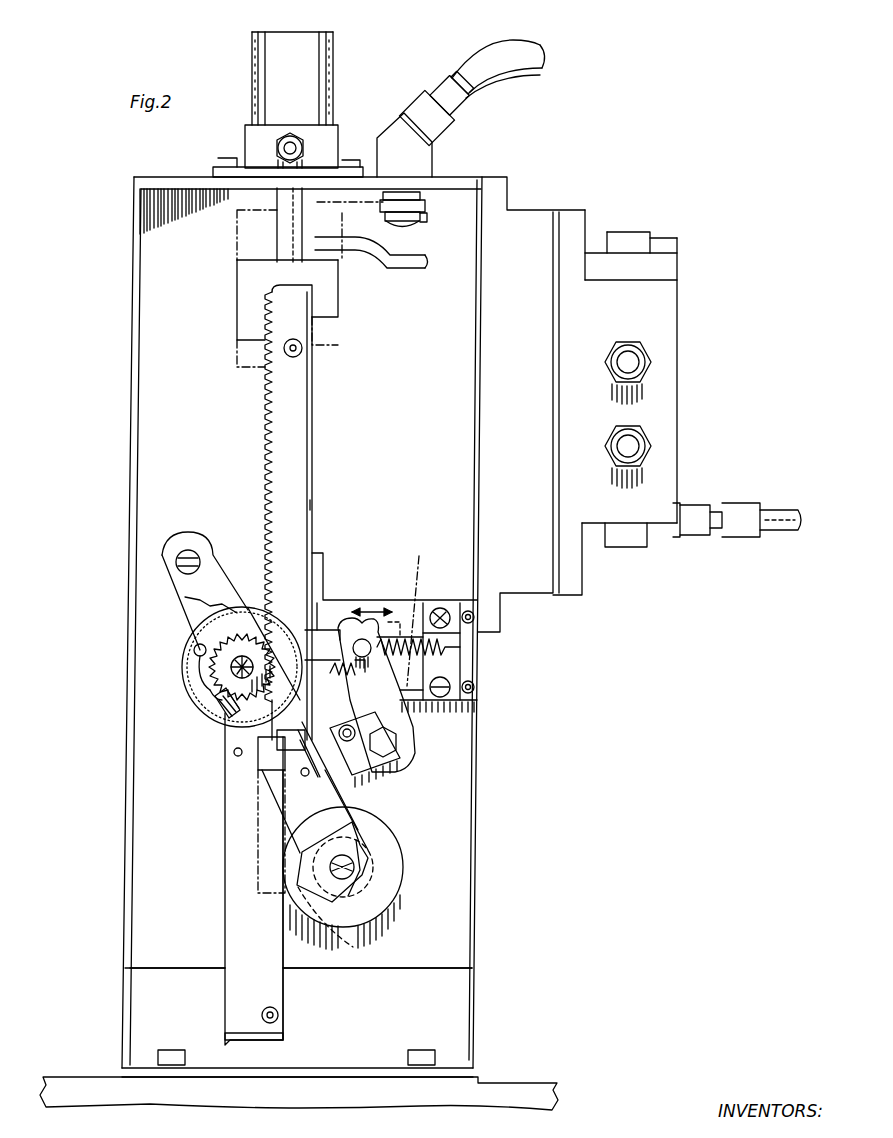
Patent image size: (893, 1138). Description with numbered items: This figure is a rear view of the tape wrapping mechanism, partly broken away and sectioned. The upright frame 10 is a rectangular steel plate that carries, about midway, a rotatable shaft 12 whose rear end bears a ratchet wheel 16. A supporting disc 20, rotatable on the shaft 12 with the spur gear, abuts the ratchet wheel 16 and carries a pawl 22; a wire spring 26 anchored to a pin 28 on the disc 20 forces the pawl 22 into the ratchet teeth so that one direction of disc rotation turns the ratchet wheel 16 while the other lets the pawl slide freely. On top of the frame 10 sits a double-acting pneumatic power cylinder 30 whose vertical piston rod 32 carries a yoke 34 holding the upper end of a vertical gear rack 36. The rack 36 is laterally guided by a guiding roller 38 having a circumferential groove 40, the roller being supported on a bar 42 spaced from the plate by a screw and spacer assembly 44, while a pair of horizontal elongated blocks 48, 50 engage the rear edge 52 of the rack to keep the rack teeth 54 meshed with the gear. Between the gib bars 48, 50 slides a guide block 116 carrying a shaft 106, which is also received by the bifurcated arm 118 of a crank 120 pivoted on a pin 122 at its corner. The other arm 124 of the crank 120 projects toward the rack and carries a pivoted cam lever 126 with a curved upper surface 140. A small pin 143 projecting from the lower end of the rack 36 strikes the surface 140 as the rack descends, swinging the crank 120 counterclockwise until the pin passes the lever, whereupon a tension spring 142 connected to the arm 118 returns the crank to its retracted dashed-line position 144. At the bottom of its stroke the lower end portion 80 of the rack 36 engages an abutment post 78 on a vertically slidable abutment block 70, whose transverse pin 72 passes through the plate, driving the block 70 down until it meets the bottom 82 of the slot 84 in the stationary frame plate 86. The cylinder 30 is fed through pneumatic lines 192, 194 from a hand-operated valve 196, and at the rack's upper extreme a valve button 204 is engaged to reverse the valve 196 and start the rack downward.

The frame 10 is at (478, 948).
The shaft 12 is at (237, 667).
The ratchet wheel 16 is at (230, 680).
The supporting disc 20 is at (238, 612).
The pawl 22 is at (217, 693).
The wire spring 26 is at (200, 660).
The pin 28 is at (196, 645).
The pneumatic power cylinder 30 is at (331, 83).
The piston rod 32 is at (277, 236).
The yoke 34 is at (237, 300).
The gear rack 36 is at (303, 408).
The guiding roller 38 is at (398, 882).
The circumferential groove 40 is at (372, 863).
The bar 42 is at (275, 752).
The screw and spacer assembly 44 is at (192, 547).
The elongated block 48 is at (328, 612).
The elongated block 50 is at (420, 696).
The rear edge 52 is at (312, 507).
The rack teeth 54 is at (267, 400).
The abutment block 70 is at (283, 985).
The transverse pin 72 is at (234, 752).
The abutment post 78 is at (279, 1017).
The lower end portion 80 is at (267, 748).
The bottom of slot 82 is at (263, 1040).
The slot 84 is at (228, 1002).
The frame plate 86 is at (458, 1005).
The shaft 106 is at (360, 638).
The guide block 116 is at (410, 647).
The bifurcated arm 118 is at (423, 672).
The crank 120 is at (397, 748).
The pivot pin 122 is at (404, 763).
The crank arm 124 is at (365, 780).
The cam lever 126 is at (318, 762).
The upper surface 140 is at (328, 772).
The tension spring 142 is at (447, 640).
The pin 143 is at (277, 780).
The retracted dashed-line position 144 is at (412, 611).
The pneumatic line 192 is at (647, 448).
The pneumatic line 194 is at (642, 353).
The hand-operated valve 196 is at (663, 388).
The valve button 204 is at (397, 218).